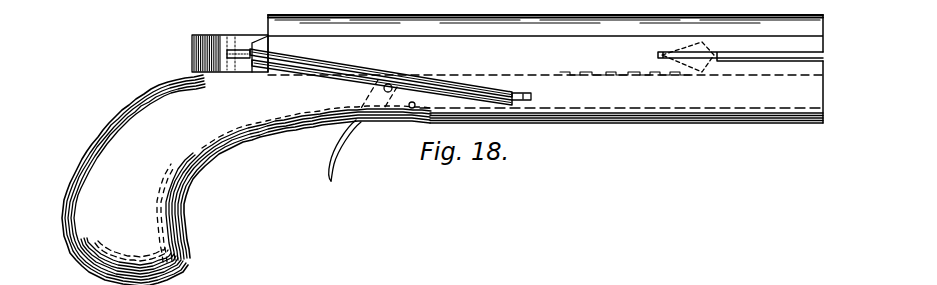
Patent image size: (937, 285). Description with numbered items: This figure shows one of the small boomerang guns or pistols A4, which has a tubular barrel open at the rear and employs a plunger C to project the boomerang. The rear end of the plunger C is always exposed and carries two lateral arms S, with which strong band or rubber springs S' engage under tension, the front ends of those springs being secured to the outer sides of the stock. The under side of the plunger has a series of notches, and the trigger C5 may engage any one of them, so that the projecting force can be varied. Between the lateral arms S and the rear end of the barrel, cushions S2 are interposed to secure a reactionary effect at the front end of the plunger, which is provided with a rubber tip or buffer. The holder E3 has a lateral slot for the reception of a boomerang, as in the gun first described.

The gun or pistol A4 is at (448, 74).
The plunger C is at (230, 45).
The lateral arms S is at (238, 61).
The band or rubber springs S' is at (390, 73).
The cushions S2 is at (258, 67).
The holder E3 is at (750, 58).
The trigger C5 is at (345, 150).